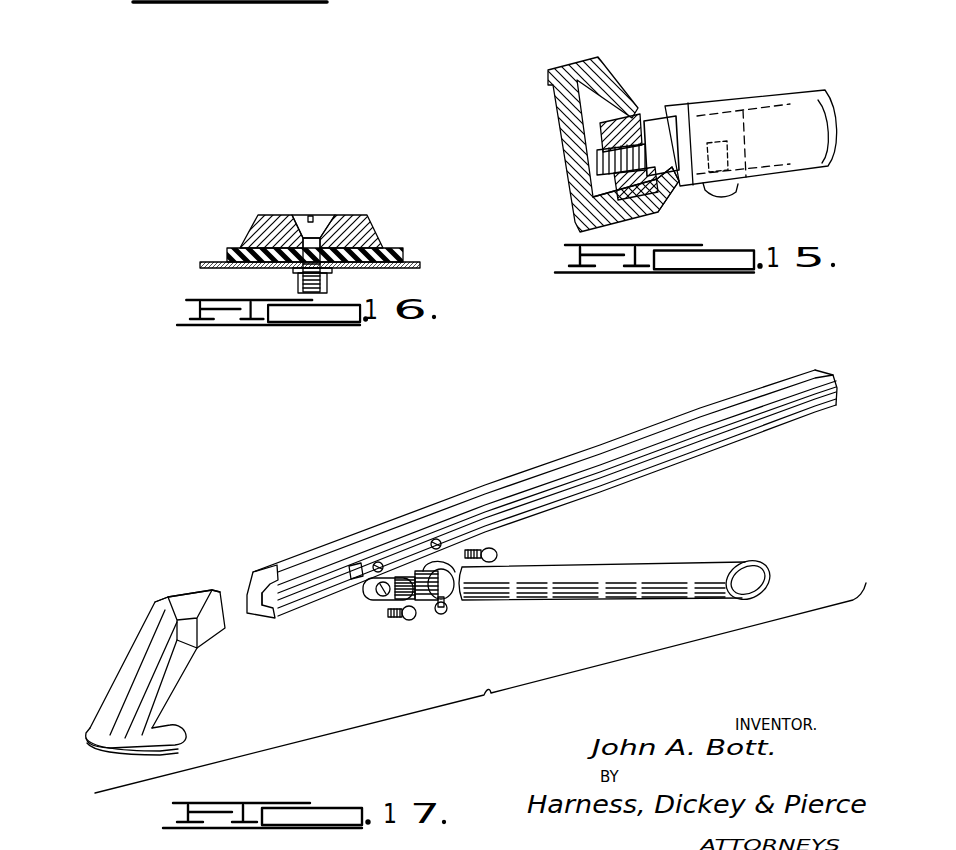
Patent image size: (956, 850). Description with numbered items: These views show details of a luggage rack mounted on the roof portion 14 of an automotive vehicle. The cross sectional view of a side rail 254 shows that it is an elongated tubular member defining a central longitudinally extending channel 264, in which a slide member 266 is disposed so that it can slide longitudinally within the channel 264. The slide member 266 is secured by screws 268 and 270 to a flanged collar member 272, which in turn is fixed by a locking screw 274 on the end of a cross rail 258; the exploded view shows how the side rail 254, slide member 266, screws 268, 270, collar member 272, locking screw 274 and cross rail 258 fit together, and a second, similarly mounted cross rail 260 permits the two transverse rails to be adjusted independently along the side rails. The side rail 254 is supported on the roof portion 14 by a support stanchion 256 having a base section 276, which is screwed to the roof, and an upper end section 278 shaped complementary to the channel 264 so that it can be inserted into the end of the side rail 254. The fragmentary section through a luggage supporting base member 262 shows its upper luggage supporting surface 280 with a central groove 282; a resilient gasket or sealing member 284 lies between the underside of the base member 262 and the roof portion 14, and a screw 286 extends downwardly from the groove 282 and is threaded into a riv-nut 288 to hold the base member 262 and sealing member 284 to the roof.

In FIG. 16, the roof portion 14 is at (202, 266).
In FIG. 15, the side rail 254 is at (608, 66).
In FIG. 17, the side rail 254 is at (490, 484).
In FIG. 17, the support stanchion 256 is at (140, 626).
In FIG. 15, the cross rail 258 is at (758, 96).
In FIG. 17, the cross rail 258 is at (641, 563).
In FIG. 17, the cross rail 260 is at (350, 571).
In FIG. 16, the luggage supporting base member 262 is at (373, 216).
In FIG. 15, the channel 264 is at (594, 195).
In FIG. 17, the channel 264 is at (262, 608).
In FIG. 15, the slide member 266 is at (609, 120).
In FIG. 15, the screw 268 is at (683, 140).
In FIG. 17, the screw 268 is at (407, 622).
In FIG. 17, the screw 270 is at (503, 552).
In FIG. 15, the flanged collar member 272 is at (674, 198).
In FIG. 17, the flanged collar member 272 is at (369, 601).
In FIG. 15, the locking screw 274 is at (739, 192).
In FIG. 17, the locking screw 274 is at (452, 610).
In FIG. 17, the base section 276 is at (172, 740).
In FIG. 17, the upper end section 278 is at (207, 590).
In FIG. 16, the upper luggage supporting surface 280 is at (268, 214).
In FIG. 16, the central groove 282 is at (300, 229).
In FIG. 16, the resilient gasket or sealing member 284 is at (404, 252).
In FIG. 16, the screw 286 is at (332, 233).
In FIG. 16, the riv-nut 288 is at (333, 286).